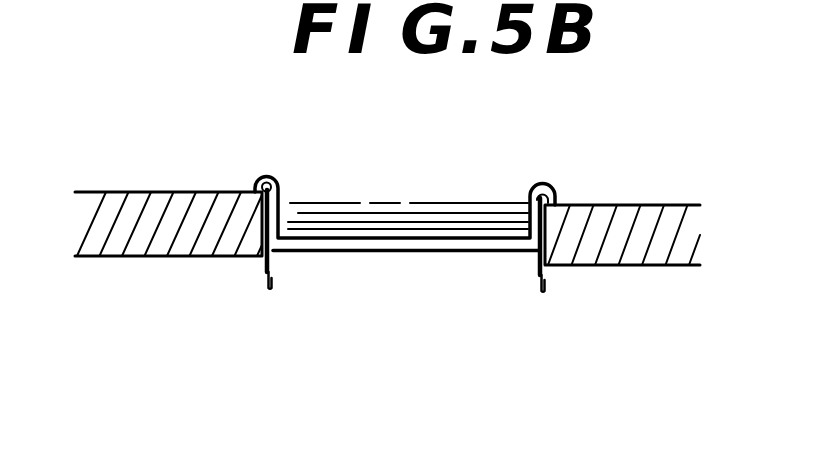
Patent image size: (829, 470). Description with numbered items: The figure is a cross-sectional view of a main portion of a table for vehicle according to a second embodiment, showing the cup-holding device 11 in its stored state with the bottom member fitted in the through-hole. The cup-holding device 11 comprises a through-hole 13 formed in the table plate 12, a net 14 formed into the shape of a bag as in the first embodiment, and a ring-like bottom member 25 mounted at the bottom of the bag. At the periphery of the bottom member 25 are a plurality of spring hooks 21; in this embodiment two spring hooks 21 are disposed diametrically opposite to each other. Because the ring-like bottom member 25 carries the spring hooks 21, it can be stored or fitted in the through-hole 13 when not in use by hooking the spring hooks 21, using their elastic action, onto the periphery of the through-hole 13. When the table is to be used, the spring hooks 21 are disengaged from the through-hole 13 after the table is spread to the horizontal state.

The cup-holding device 11 is at (328, 363).
The table plate 12 is at (650, 205).
The through-hole 13 is at (248, 236).
The net 14 is at (414, 212).
The spring hooks 21 is at (256, 181).
The ring-like bottom member 25 is at (428, 254).